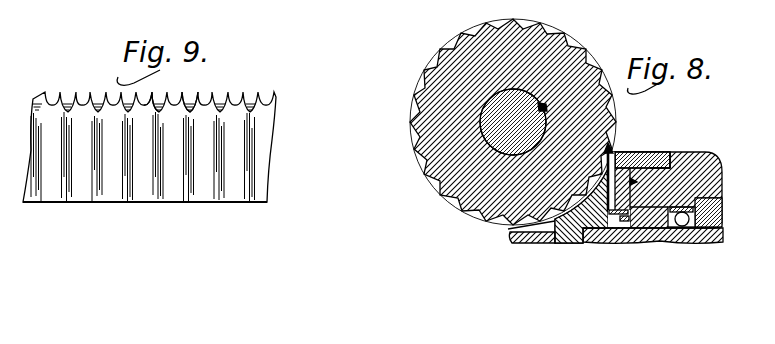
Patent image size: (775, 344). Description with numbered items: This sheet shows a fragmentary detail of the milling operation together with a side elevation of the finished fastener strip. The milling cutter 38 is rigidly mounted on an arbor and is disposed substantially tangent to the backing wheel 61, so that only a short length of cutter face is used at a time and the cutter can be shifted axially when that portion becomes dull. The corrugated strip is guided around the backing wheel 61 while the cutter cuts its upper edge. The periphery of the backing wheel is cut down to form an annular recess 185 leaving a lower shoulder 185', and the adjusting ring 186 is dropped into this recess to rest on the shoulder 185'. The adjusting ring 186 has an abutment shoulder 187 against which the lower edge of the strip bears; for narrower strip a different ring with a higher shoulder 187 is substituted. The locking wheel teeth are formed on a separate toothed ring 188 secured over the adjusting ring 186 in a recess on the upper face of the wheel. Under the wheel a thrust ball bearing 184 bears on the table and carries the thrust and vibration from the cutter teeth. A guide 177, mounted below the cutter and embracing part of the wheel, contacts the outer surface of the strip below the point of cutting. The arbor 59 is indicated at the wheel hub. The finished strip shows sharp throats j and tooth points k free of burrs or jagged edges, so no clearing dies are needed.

In FIG. 9, the tooth points k is at (153, 93).
In FIG. 9, the throats j is at (196, 99).
In FIG. 8, the ratchet wheel 59 is at (470, 128).
In FIG. 8, the milling cutter 38 is at (424, 176).
In FIG. 8, the backing wheel 61 is at (700, 152).
In FIG. 8, the toothed ring 188 is at (628, 151).
In FIG. 8, the adjusting ring 186 is at (648, 167).
In FIG. 8, the annular recess 185 is at (673, 146).
In FIG. 8, the abutment shoulder 187 is at (703, 197).
In FIG. 8, the thrust ball bearing 184 is at (694, 209).
In FIG. 8, the lower shoulder 185' is at (676, 235).
In FIG. 8, the guide 177 is at (510, 233).